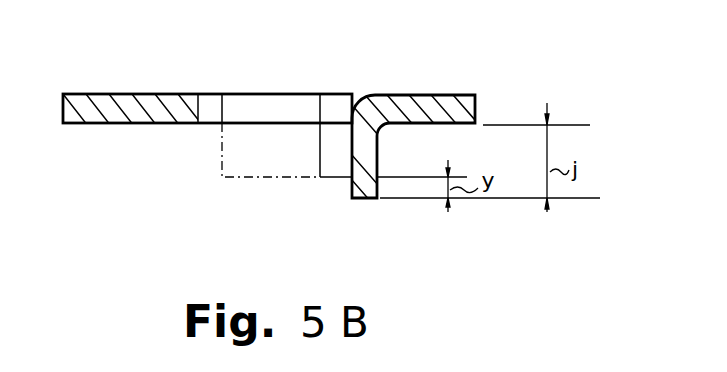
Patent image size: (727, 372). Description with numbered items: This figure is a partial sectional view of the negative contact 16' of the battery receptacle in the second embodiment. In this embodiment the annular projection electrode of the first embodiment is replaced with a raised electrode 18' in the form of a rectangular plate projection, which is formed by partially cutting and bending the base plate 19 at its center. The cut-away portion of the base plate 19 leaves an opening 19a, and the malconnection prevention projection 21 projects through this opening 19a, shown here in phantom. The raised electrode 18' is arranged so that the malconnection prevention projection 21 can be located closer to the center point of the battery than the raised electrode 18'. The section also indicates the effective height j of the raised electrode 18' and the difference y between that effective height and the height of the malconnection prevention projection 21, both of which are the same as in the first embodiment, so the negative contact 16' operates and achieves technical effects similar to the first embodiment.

The base plate 19 is at (96, 105).
The opening 19a is at (198, 108).
The malconnection prevention projection 21 is at (245, 172).
The negative contact 16' is at (420, 132).
The raised electrode 18' is at (487, 228).